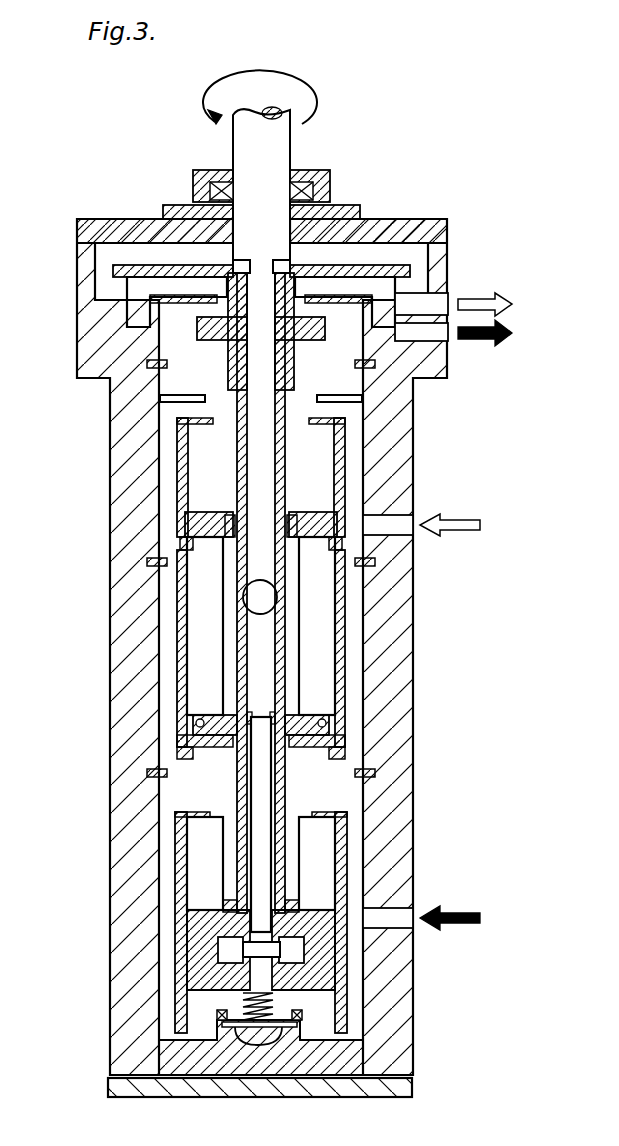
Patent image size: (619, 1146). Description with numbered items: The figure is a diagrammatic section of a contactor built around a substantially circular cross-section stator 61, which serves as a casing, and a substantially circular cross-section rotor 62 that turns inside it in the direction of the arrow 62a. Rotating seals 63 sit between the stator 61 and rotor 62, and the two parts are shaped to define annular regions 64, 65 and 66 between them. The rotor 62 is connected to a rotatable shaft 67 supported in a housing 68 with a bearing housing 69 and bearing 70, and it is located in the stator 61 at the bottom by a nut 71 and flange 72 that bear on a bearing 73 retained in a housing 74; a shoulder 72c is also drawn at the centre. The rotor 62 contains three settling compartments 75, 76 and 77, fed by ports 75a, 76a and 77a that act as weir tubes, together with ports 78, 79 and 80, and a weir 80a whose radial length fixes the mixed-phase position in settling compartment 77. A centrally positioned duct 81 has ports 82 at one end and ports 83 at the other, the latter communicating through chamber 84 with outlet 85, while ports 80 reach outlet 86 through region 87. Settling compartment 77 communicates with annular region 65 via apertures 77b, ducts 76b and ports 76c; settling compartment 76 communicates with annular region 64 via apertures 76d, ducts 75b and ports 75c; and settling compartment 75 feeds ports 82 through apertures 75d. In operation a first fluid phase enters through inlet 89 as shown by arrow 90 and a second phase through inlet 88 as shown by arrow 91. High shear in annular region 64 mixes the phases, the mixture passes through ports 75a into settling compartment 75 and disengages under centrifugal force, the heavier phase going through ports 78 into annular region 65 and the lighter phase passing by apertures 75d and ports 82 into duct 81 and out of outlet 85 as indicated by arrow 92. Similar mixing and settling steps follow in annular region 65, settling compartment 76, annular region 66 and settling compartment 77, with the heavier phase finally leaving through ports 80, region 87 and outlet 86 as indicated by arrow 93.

The stator 61 is at (400, 655).
The rotor 62 is at (408, 622).
The arrow 62a is at (296, 82).
The rotating seals 63 is at (165, 398).
The annular region 64 is at (355, 866).
The annular region 65 is at (355, 682).
The annular region 66 is at (400, 478).
The rotatable shaft 67 is at (248, 170).
The housing 68 is at (102, 222).
The bearing housing 69 is at (330, 183).
The bearing 70 is at (355, 198).
The nut 71 is at (257, 1037).
The flange 72 is at (240, 1030).
The shoulder 72c is at (300, 738).
The bearing 73 is at (360, 1023).
The housing 74 is at (300, 1022).
The settling compartment 75 is at (205, 845).
The ports 75a is at (200, 815).
The ducts 75b is at (225, 872).
The ports 75c is at (230, 935).
The apertures 75d is at (230, 905).
The settling compartment 76 is at (190, 590).
The ports 76a is at (350, 598).
The ducts 76b is at (215, 612).
The ports 76c is at (205, 722).
The apertures 76d is at (196, 725).
The settling compartment 77 is at (185, 450).
The ports 77a is at (165, 425).
The apertures 77b is at (233, 533).
The ports 78 is at (195, 745).
The ports 79 is at (178, 552).
The ports 80 is at (210, 307).
The weir 80a is at (203, 297).
The duct 81 is at (267, 487).
The ports 82 is at (222, 952).
The ports 83 is at (265, 257).
The chamber 84 is at (440, 258).
The outlet 85 is at (440, 305).
The outlet 86 is at (443, 332).
The region 87 is at (130, 284).
The inlet 88 is at (420, 527).
The inlet 89 is at (400, 918).
The arrow 90 is at (482, 918).
The arrow 91 is at (482, 525).
The arrow 92 is at (514, 304).
The arrow 93 is at (515, 333).